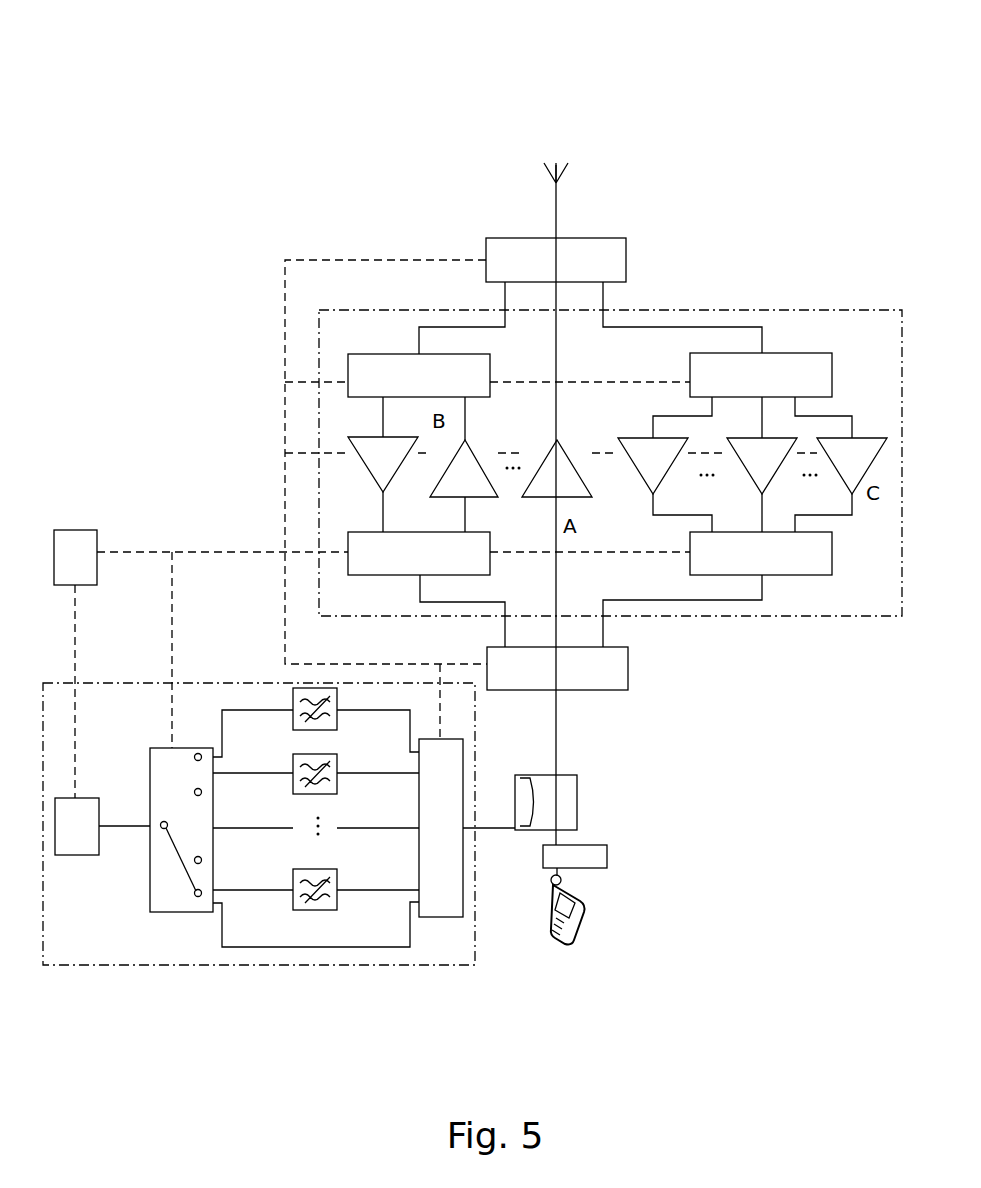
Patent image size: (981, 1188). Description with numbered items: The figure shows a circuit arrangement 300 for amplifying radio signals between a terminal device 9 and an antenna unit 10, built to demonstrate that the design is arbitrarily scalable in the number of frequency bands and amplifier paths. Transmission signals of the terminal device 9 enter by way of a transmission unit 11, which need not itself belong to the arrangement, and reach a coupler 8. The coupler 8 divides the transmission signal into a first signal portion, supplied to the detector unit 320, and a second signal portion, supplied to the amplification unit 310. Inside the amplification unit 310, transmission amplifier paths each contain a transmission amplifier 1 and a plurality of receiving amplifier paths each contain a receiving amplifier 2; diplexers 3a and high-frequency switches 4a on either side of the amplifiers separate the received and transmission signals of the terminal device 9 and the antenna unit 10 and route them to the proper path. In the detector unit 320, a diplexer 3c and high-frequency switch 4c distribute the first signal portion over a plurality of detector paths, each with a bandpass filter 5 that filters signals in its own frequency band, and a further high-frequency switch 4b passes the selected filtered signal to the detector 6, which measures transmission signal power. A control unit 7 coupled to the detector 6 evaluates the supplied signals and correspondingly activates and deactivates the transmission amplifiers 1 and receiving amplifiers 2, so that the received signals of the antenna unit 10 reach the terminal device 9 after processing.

The transmission amplifier 1 is at (511, 468).
The receiving amplifier 2 is at (617, 465).
The diplexer 3a is at (590, 464).
The high-frequency switch 4a is at (690, 464).
The diplexer 3c is at (441, 828).
The high-frequency switch 4c is at (441, 848).
The high-frequency switch 4b is at (284, 828).
The bandpass filter 5 is at (297, 808).
The detector 6 is at (102, 826).
The control unit 7 is at (75, 557).
The coupler 8 is at (539, 821).
The terminal device 9 is at (543, 906).
The antenna unit 10 is at (570, 504).
The transmission unit 11 is at (575, 856).
The circuit arrangement 300 is at (625, 106).
The amplification unit 310 is at (782, 310).
The detector unit 320 is at (452, 968).